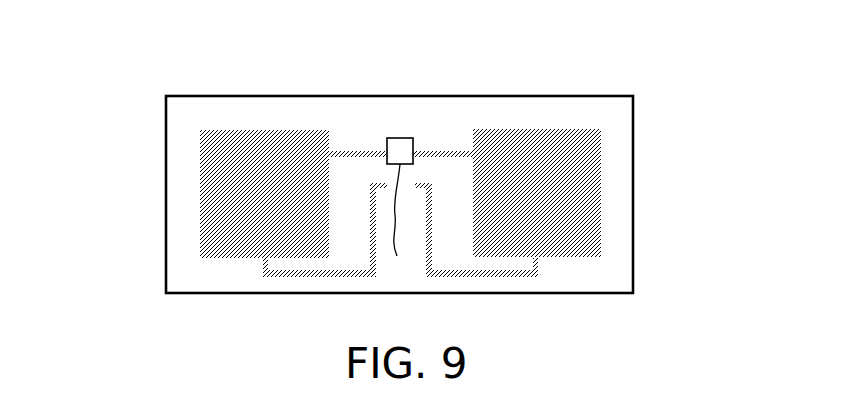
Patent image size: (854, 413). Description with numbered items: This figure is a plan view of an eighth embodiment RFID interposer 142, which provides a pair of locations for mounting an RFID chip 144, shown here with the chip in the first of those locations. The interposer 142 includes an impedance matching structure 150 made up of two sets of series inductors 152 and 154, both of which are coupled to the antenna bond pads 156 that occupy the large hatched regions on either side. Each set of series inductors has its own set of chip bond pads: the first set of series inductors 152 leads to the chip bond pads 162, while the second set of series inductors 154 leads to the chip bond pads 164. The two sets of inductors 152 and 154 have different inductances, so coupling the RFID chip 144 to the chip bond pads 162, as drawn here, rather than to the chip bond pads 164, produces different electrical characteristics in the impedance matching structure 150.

The RFID interposer 142 is at (345, 156).
The impedance matching structure 150 is at (356, 101).
The antenna bond pads 156 is at (270, 133).
The series inductors 152 is at (445, 136).
The chip bond pads 162 is at (422, 141).
The chip bond pads 164 is at (382, 188).
The series inductors 154 is at (376, 281).
The RFID chip 144 is at (403, 217).